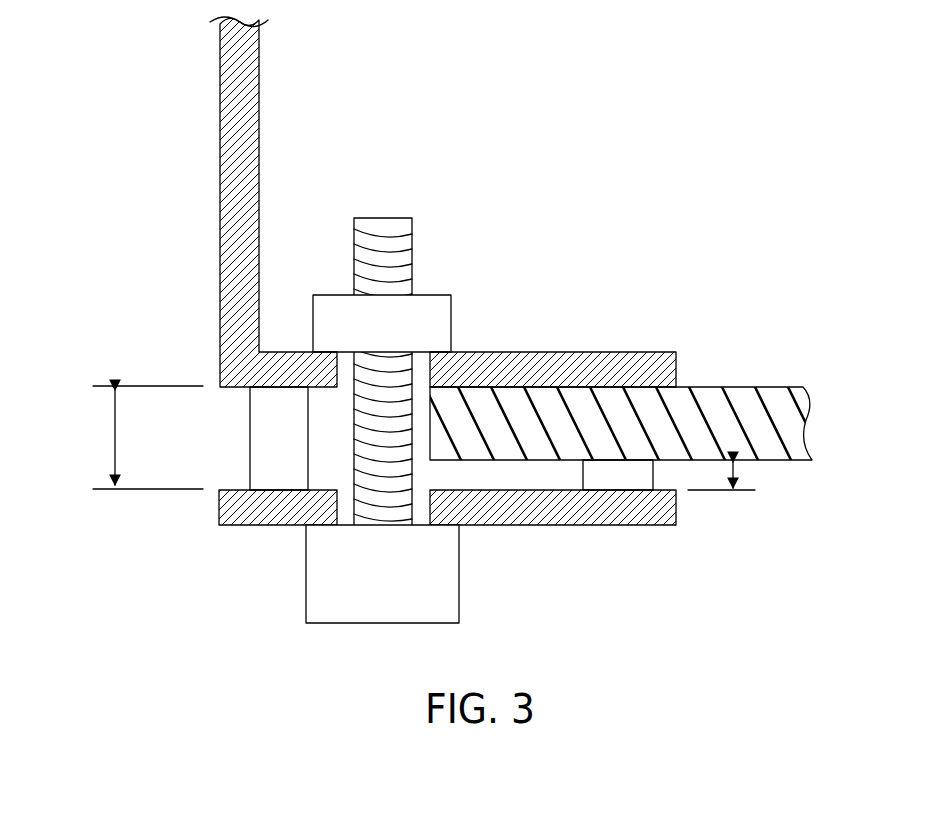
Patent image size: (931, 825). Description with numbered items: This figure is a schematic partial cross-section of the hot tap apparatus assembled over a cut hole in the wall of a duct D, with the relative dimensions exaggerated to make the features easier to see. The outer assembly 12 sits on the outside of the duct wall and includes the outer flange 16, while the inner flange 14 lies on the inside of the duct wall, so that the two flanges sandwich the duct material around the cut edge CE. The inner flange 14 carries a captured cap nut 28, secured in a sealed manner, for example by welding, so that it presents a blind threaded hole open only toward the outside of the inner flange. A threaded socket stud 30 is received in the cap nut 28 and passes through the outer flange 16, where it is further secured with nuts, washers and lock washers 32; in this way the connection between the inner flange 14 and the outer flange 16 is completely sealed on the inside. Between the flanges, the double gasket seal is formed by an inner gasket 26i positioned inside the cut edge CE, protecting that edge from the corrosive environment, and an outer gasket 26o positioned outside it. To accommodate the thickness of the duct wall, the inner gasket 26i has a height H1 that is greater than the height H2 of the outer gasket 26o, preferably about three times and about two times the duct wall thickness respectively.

The outer assembly 12 is at (189, 220).
The inner flange 14 is at (567, 526).
The outer flange 16 is at (643, 354).
The inner gasket 26i is at (250, 468).
The outer gasket 26o is at (655, 492).
The captured cap nut 28 is at (460, 570).
The threaded socket stud 30 is at (413, 222).
The nuts, washers and lock washers 32 is at (312, 295).
The cut edge CE is at (426, 417).
The duct D is at (775, 398).
The height of inner gasket H1 is at (115, 432).
The height of outer gasket H2 is at (738, 476).